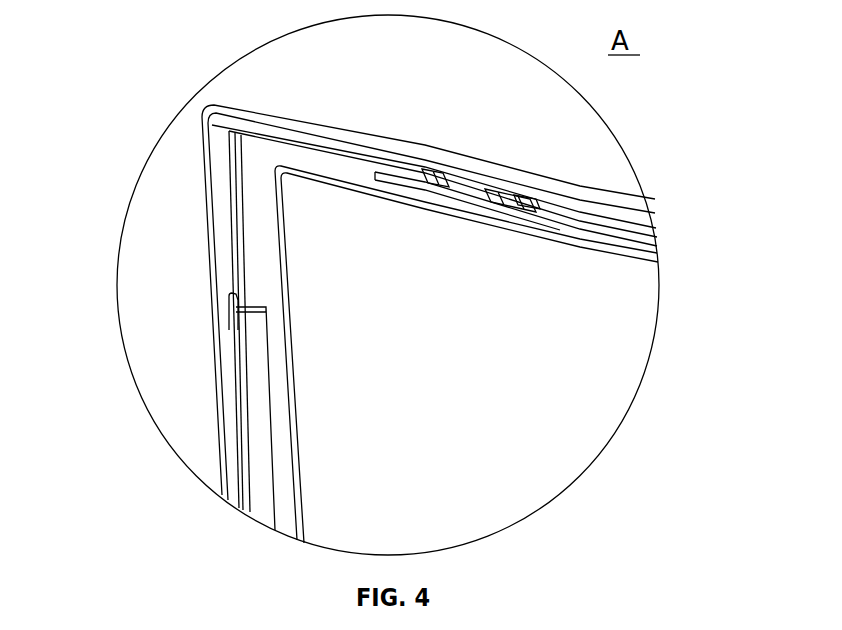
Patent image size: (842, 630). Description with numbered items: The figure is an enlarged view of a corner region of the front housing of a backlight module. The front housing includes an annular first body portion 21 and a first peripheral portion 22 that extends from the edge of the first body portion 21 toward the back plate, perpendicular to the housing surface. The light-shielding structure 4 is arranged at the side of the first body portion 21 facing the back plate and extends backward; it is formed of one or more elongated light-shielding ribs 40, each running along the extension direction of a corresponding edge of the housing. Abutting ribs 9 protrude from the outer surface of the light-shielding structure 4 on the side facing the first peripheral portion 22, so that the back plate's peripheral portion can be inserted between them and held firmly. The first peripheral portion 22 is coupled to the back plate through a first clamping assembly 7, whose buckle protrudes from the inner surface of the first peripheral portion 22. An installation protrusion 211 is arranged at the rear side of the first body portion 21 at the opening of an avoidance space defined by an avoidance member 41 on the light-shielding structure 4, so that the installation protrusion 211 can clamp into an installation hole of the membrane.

The first peripheral portion 22 is at (223, 158).
The first body portion 21 is at (262, 228).
The installation protrusion 211 is at (528, 228).
The light-shielding rib 40 is at (580, 228).
The abutting rib 9 is at (433, 175).
The avoidance member 41 is at (533, 190).
The first clamping assembly 7 is at (228, 303).
The light-shielding structure 4 is at (260, 363).